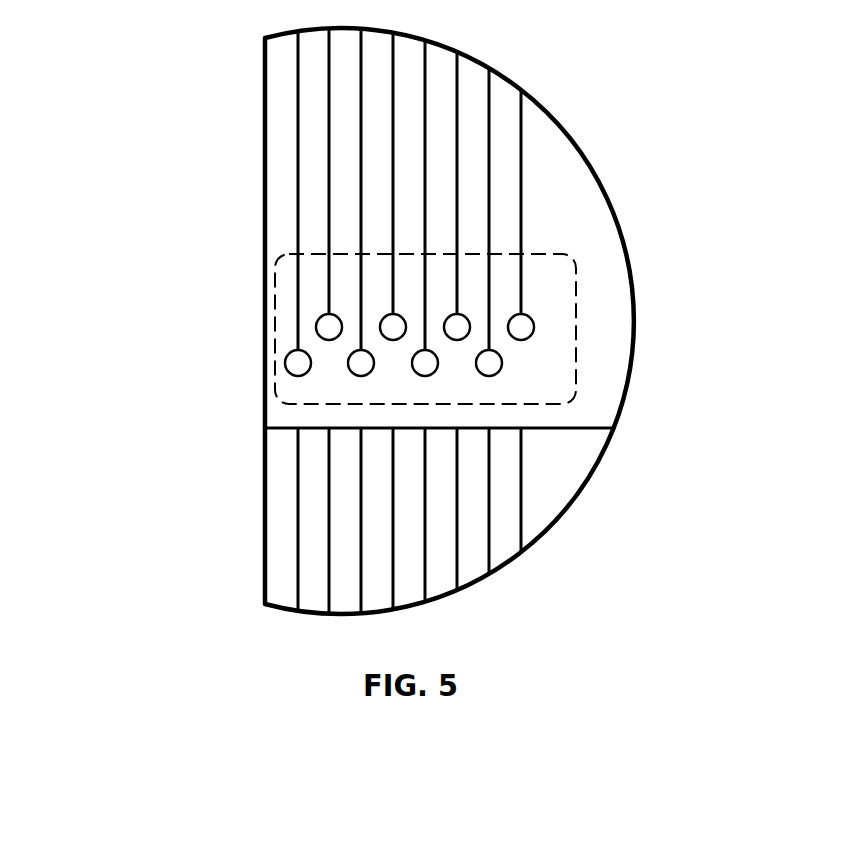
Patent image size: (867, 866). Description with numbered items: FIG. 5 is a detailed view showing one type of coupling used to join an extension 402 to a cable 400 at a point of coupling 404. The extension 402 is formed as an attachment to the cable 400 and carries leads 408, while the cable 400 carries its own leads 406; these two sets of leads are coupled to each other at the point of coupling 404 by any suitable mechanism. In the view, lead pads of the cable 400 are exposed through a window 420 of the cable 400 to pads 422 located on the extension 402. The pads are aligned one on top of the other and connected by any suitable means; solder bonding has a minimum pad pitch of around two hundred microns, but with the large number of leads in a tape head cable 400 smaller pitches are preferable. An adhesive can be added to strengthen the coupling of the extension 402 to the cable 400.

The cable 400 is at (265, 493).
The extension 402 is at (347, 189).
The point of coupling 404 is at (446, 265).
The leads of the cable 406 is at (522, 494).
The leads of the extension 408 is at (522, 133).
The window 420 is at (576, 373).
The pads 422 is at (285, 363).